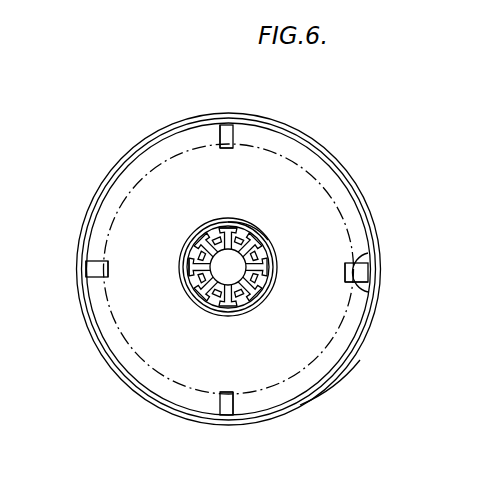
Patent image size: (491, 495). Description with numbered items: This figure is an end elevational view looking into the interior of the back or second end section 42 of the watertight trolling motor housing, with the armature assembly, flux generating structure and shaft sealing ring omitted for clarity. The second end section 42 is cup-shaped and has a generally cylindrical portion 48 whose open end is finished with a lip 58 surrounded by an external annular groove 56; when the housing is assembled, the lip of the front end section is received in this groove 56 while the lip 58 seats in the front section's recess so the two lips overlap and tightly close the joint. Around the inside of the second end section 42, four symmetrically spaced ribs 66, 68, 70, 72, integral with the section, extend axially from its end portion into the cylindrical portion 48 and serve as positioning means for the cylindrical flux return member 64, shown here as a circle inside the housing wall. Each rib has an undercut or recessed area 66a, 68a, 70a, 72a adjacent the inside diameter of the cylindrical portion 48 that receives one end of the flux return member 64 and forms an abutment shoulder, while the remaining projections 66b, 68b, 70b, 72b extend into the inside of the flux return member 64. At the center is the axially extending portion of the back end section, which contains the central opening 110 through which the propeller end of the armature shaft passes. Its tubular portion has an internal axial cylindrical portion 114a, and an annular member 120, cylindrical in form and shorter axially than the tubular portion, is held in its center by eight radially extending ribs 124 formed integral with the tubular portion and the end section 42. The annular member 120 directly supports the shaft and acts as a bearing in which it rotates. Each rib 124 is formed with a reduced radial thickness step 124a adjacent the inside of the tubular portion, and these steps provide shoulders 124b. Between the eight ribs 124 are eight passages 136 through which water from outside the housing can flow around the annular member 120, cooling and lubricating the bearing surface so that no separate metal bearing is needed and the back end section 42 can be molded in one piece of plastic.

The second end section 42 is at (141, 398).
The cylindrical portion 48 is at (368, 342).
The external annular groove 56 is at (305, 401).
The lip 58 is at (337, 362).
The cylindrical flux return member 64 is at (143, 172).
The rib 66 is at (87, 266).
The recessed area 66a is at (95, 272).
The projection 66b is at (110, 262).
The rib 68 is at (234, 126).
The recessed area 68a is at (221, 126).
The projection 68b is at (226, 149).
The rib 70 is at (368, 268).
The recessed area 70a is at (355, 272).
The projection 70b is at (370, 282).
The rib 72 is at (216, 408).
The recessed area 72a is at (228, 414).
The projection 72b is at (227, 392).
The central opening 110 is at (186, 284).
The internal axial cylindrical portion 114a is at (254, 222).
The annular member 120 is at (273, 277).
The radially extending ribs 124 is at (212, 232).
The reduced radial thickness step 124a is at (196, 240).
The shoulders 124b is at (256, 240).
The passages 136 is at (283, 345).